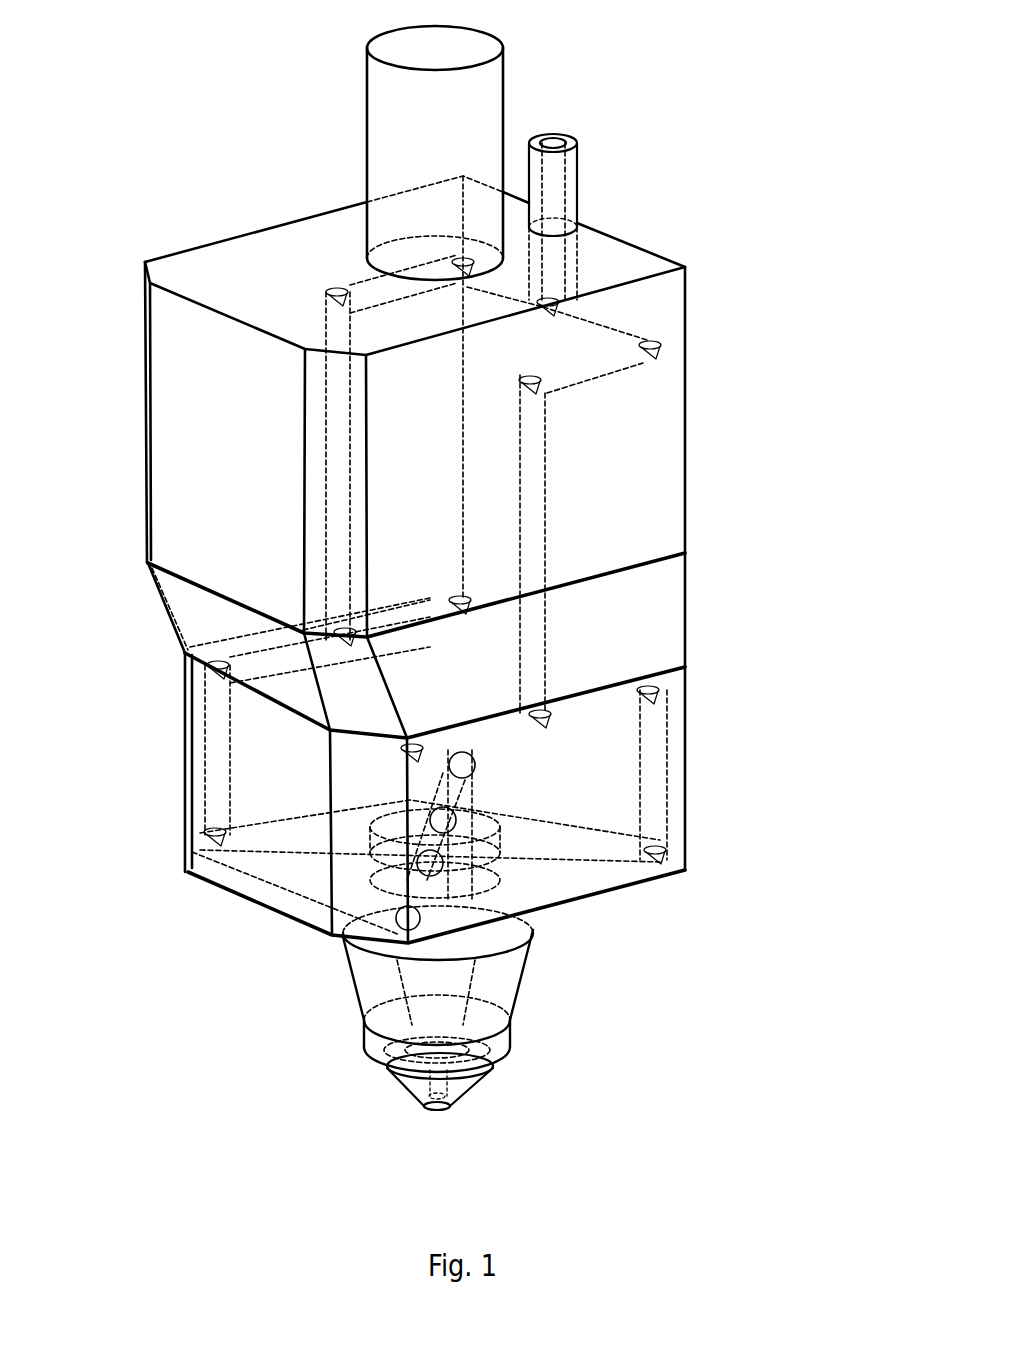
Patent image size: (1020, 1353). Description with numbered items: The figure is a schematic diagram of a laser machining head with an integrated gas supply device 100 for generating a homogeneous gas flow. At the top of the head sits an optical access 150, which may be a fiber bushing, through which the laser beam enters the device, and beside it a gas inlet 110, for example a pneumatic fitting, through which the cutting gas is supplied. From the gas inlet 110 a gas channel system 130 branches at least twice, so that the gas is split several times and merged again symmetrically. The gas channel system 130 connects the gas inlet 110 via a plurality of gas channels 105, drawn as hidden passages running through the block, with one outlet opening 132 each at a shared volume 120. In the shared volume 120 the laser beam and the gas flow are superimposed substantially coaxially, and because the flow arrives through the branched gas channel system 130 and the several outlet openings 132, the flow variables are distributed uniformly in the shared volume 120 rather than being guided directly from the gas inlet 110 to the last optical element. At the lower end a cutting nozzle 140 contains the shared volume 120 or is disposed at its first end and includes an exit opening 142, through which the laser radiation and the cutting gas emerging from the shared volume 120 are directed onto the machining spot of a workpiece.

The gas supply device 100 is at (110, 125).
The gas channels 105 is at (580, 843).
The gas inlet 110 is at (567, 153).
The shared volume 120 is at (364, 1000).
The gas channel system 130 is at (650, 390).
The outlet opening 132 is at (425, 860).
The cutting nozzle 140 is at (520, 982).
The exit opening 142 is at (423, 1108).
The optical access 150 is at (503, 52).